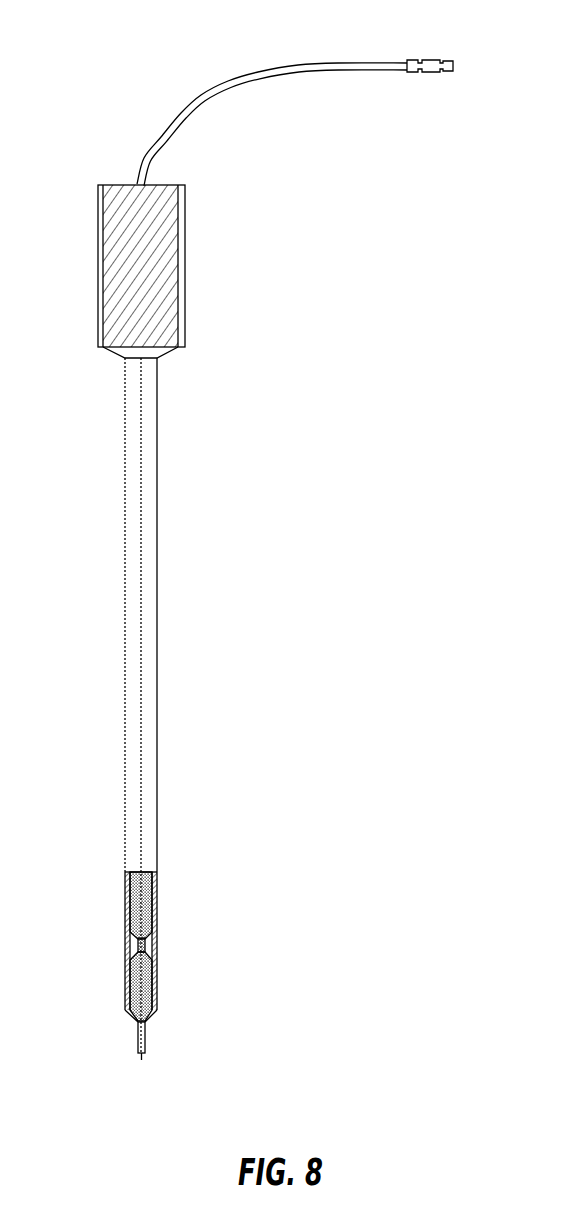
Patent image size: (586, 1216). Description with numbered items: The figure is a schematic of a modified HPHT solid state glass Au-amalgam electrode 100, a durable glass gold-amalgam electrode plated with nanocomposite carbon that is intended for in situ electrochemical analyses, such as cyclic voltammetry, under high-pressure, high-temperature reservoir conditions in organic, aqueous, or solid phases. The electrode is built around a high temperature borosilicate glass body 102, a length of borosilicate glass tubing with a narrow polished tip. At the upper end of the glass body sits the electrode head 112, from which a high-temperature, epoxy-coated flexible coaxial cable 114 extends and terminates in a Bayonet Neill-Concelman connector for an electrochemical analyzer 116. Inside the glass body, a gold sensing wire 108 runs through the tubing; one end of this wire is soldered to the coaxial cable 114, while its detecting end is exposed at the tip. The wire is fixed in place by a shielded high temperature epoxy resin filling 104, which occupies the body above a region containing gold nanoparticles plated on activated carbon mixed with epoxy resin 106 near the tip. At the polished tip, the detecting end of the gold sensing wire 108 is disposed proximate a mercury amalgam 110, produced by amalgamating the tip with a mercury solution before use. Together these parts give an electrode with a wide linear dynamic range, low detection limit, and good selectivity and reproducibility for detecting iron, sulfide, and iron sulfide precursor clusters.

The modified HPHT solid state glass Au-amalgam electrode 100 is at (114, 62).
The high temperature borosilicate glass body 102 is at (158, 650).
The shielded high temperature epoxy resin filling 104 is at (148, 487).
The region containing gold nanoparticles plated on activated carbon mixed with epoxy 106 is at (115, 870).
The gold sensing wire 108 is at (142, 1057).
The mercury amalgam 110 is at (137, 1038).
The electrode head 112 is at (185, 265).
The coaxial cable 114 is at (200, 107).
The Bayonet Neill-Concelman (BNC) connector for an electrochemical analyzer 116 is at (453, 66).